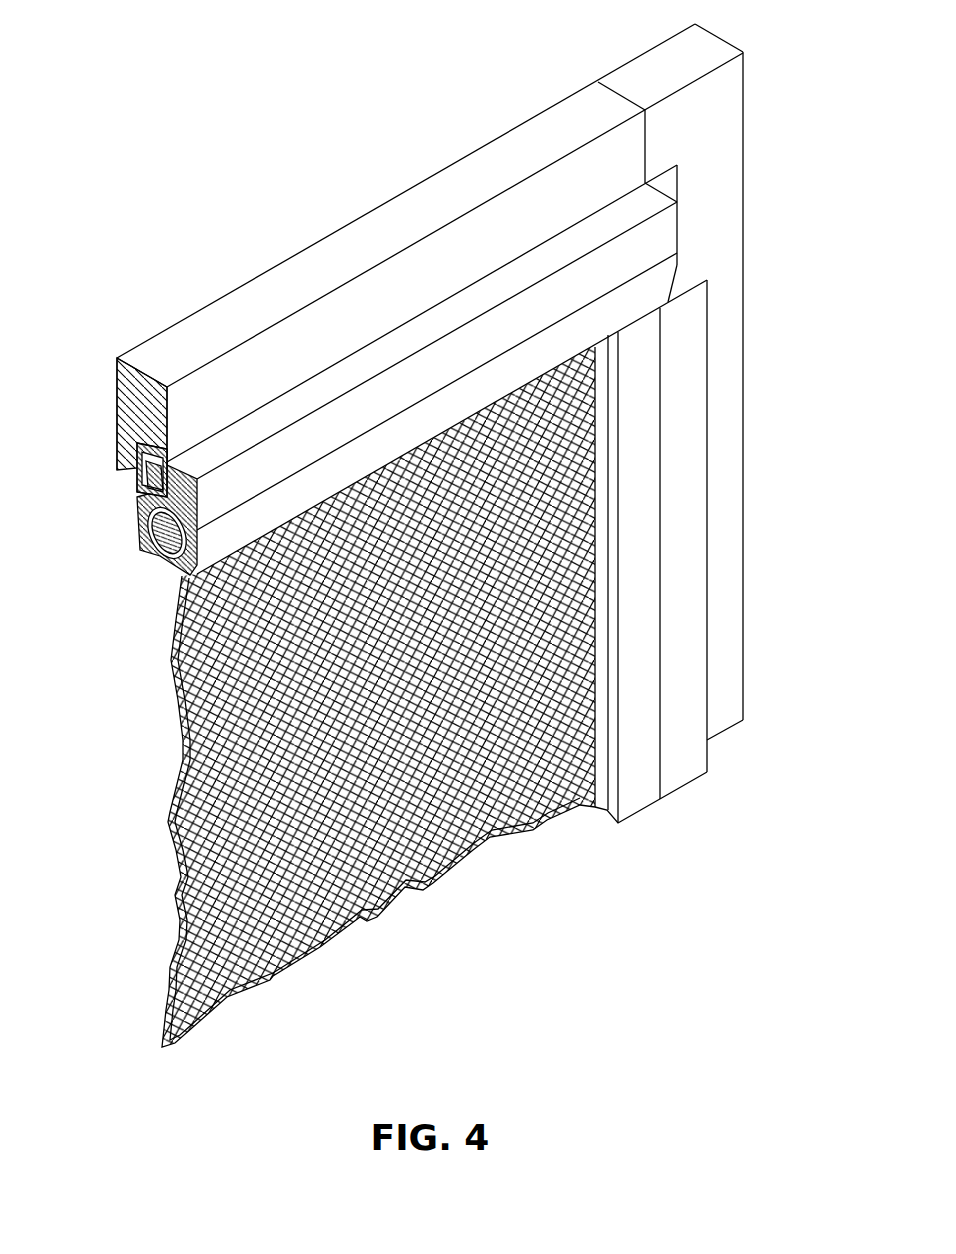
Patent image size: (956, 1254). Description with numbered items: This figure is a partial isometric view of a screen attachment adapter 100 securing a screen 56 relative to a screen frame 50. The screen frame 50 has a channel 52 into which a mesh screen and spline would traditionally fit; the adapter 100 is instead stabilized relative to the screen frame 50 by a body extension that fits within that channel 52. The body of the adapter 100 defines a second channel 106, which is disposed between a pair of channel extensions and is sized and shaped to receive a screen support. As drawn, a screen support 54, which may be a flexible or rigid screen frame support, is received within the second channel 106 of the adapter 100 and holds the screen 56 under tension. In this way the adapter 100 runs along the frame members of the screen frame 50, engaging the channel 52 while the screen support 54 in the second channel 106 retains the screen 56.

The screen frame 50 is at (495, 235).
The channel 52 is at (107, 440).
The screen support 54 is at (168, 548).
The screen 56 is at (158, 868).
The adapter 100 is at (381, 368).
The second channel 106 is at (116, 505).